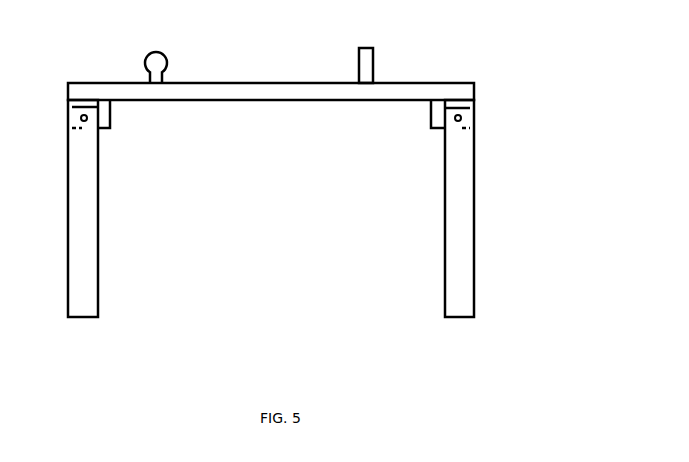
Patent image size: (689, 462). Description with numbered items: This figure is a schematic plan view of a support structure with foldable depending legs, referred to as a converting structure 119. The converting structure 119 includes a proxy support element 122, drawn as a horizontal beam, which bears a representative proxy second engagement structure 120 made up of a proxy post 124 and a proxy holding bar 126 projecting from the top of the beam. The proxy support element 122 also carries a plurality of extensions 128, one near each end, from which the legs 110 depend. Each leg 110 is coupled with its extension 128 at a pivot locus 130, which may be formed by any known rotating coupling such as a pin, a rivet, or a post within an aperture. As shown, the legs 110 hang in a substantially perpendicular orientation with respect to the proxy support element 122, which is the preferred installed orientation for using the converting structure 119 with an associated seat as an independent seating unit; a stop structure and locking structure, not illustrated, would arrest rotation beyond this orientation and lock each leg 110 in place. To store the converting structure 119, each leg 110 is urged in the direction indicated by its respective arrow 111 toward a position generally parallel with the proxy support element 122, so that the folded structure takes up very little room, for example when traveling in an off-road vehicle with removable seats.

The legs 110 is at (98, 223).
The arrow 111 is at (112, 317).
The converting structure 119 is at (315, 187).
The proxy second engagement structure 120 is at (284, 83).
The proxy support element 122 is at (227, 100).
The proxy post 124 is at (165, 58).
The proxy holding bar 126 is at (373, 62).
The extensions 128 is at (112, 105).
The pivot locus 130 is at (79, 115).